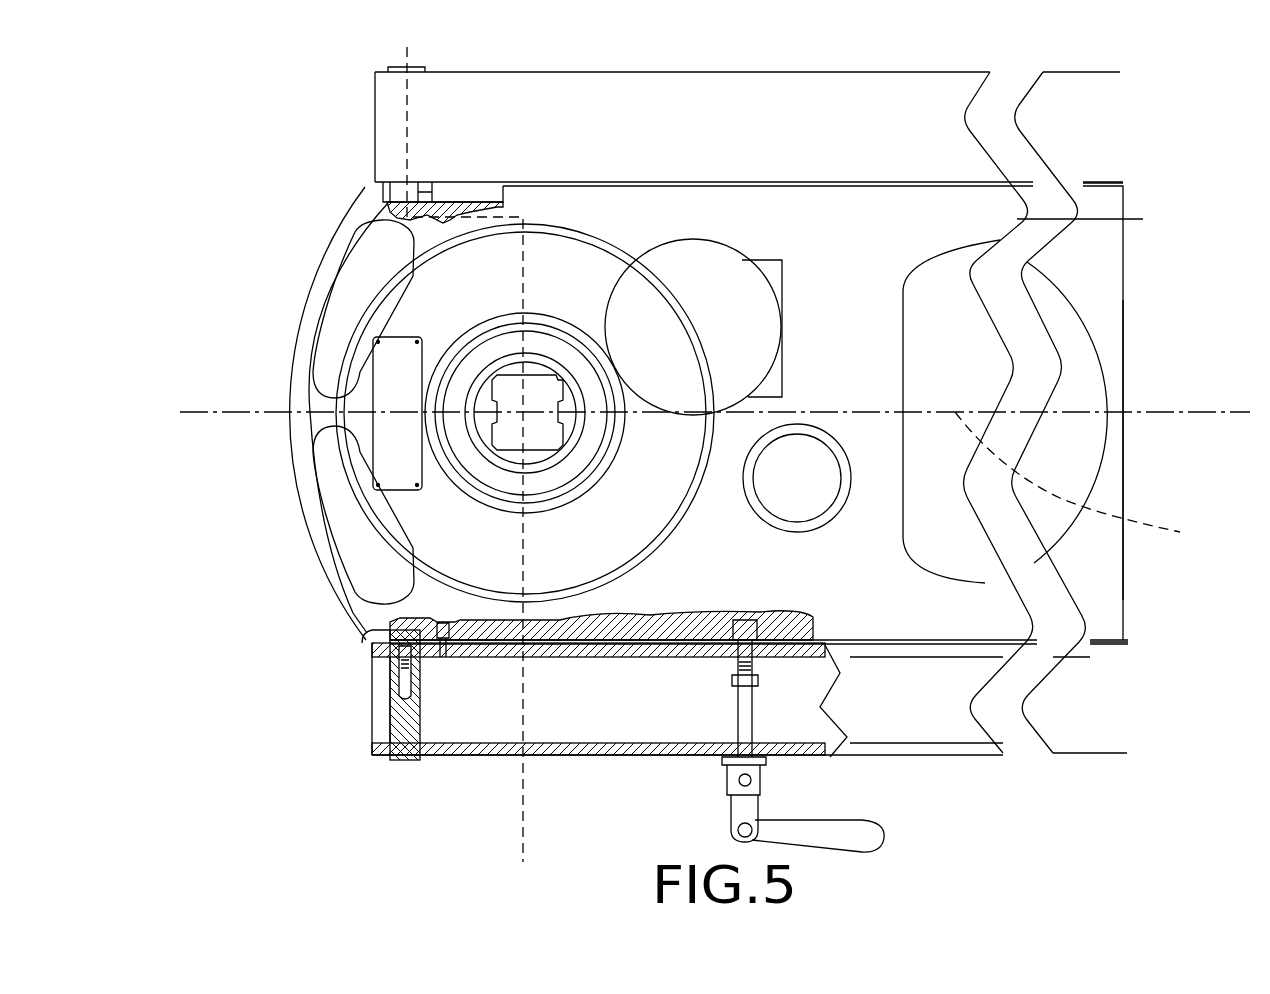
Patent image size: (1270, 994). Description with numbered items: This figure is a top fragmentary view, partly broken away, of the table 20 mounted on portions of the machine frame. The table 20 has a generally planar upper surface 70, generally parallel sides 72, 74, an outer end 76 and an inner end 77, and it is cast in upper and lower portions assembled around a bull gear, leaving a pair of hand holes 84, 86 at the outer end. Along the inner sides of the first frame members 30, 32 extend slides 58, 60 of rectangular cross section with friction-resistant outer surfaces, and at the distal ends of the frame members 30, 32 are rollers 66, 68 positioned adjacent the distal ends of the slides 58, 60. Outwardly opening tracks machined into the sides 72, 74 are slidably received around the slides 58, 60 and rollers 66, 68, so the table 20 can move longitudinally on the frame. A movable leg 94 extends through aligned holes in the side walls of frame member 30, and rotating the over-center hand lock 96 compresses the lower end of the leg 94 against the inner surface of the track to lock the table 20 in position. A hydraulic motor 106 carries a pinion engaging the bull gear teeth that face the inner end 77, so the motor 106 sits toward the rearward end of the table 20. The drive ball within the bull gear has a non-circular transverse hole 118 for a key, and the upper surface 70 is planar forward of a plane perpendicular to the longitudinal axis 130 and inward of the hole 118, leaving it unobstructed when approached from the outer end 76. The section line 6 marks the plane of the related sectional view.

The section line 6- 6 is at (407, 47).
The table 20 is at (1125, 278).
The first frame member 30 is at (680, 72).
The first frame member 32 is at (680, 757).
The slide 58 is at (470, 192).
The slide 60 is at (621, 638).
The roller 66 is at (380, 188).
The roller 68 is at (378, 632).
The upper surface 70 is at (1143, 219).
The side 72 is at (1087, 182).
The side 74 is at (1107, 645).
The outer end 76 is at (298, 498).
The inner end 77 is at (1123, 466).
The hand hole 84 is at (323, 305).
The hand hole 86 is at (330, 566).
The movable leg 94 is at (753, 708).
The over-center hand lock 96 is at (885, 840).
The hydraulic motor 106 is at (782, 328).
The transverse hole 118 is at (484, 428).
The longitudinal axis 130 is at (1097, 483).